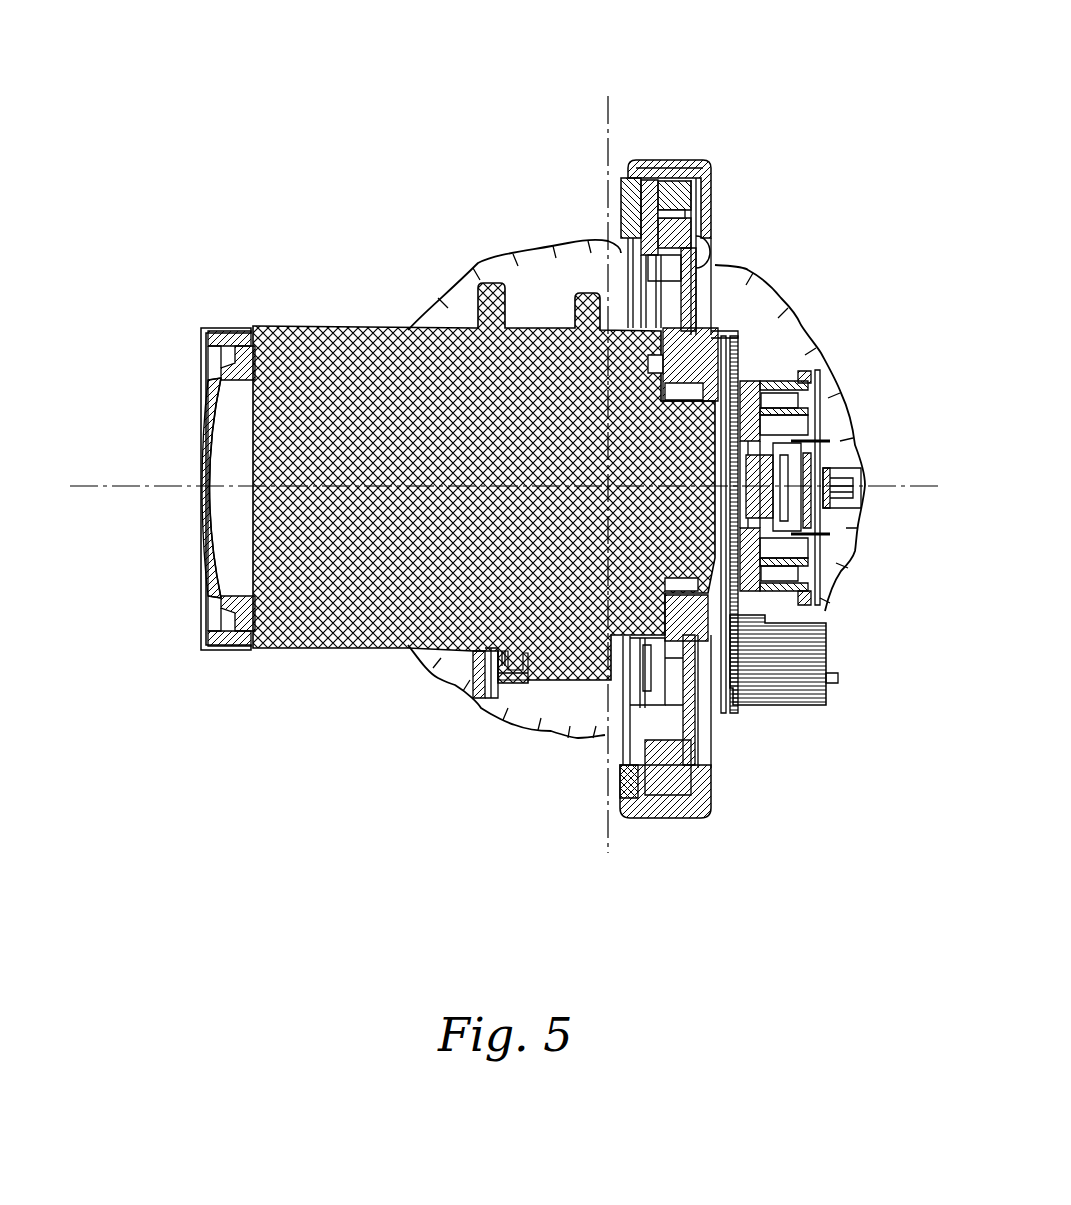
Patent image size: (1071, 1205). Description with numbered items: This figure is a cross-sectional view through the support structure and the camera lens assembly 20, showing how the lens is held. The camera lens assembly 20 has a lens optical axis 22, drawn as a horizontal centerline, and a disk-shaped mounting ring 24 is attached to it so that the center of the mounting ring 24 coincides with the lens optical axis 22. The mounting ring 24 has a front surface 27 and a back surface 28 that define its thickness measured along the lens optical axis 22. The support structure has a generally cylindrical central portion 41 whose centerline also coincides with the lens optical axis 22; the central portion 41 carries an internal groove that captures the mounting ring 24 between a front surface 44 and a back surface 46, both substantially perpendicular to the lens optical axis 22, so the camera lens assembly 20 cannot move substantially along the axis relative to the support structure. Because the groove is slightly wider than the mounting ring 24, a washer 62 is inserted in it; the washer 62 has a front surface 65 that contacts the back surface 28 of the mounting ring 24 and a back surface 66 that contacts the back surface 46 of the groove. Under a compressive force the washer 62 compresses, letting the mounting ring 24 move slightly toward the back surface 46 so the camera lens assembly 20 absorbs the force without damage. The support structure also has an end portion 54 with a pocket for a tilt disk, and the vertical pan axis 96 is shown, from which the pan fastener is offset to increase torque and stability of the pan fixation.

The camera lens assembly 20 is at (300, 625).
The lens optical axis 22 is at (100, 478).
The mounting ring 24 is at (700, 240).
The front surface 27 is at (610, 197).
The back surface 28 is at (692, 160).
The central portion 41 is at (668, 155).
The front surface 44 is at (645, 225).
The back surface 46 is at (713, 205).
The end portion 54 is at (527, 700).
The washer 62 is at (703, 173).
The front surface 65 is at (565, 235).
The back surface 66 is at (707, 185).
The pan axis 96 is at (600, 103).